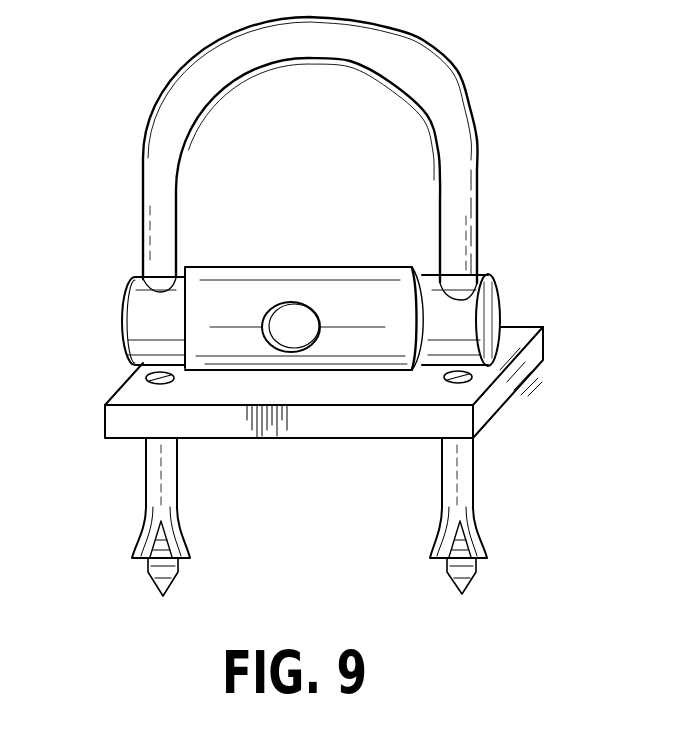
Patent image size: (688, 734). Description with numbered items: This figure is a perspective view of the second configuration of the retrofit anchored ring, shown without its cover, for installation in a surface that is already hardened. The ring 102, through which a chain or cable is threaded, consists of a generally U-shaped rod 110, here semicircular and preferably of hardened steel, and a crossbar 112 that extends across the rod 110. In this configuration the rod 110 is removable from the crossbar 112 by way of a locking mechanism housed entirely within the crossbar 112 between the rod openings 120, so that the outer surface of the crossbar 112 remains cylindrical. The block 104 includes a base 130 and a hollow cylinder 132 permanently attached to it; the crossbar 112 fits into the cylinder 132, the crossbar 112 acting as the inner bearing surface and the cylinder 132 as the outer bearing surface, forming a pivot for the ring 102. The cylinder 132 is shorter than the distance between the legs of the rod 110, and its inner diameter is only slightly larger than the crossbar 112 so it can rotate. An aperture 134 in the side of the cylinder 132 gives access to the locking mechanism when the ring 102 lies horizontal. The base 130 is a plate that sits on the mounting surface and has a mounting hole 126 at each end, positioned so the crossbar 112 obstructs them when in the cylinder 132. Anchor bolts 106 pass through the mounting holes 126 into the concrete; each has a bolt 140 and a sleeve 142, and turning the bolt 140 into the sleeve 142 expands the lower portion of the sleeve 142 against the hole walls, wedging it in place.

The ring 102 is at (461, 71).
The U-shaped rod 110 is at (478, 152).
The crossbar 112 is at (500, 302).
The rod openings 120 is at (145, 294).
The hollow cylinder 132 is at (300, 267).
The aperture 134 is at (266, 316).
The block 104 is at (531, 379).
The base 130 is at (293, 440).
The mounting hole 126 is at (148, 382).
The anchor bolts 106 is at (143, 490).
The sleeve 142 is at (130, 531).
The bolt 140 is at (150, 580).